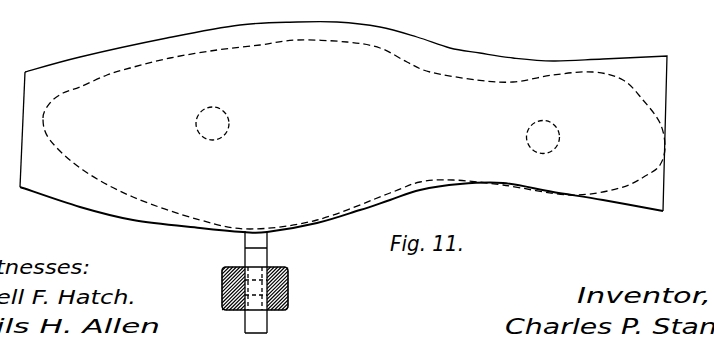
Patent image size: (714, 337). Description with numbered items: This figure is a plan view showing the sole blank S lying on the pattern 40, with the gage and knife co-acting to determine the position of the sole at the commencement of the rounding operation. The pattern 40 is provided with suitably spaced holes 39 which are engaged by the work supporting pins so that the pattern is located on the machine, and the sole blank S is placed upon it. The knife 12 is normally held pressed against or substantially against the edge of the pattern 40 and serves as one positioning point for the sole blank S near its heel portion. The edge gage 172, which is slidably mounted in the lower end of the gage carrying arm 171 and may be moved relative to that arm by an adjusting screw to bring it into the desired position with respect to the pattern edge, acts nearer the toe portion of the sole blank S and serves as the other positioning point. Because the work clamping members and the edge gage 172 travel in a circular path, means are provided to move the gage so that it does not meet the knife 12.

The sole blank S is at (335, 127).
The knife 12 is at (503, 184).
The holes 39 is at (226, 113).
The pattern 40 is at (143, 70).
The gage carrying arm 171 is at (222, 296).
The edge gage 172 is at (246, 239).